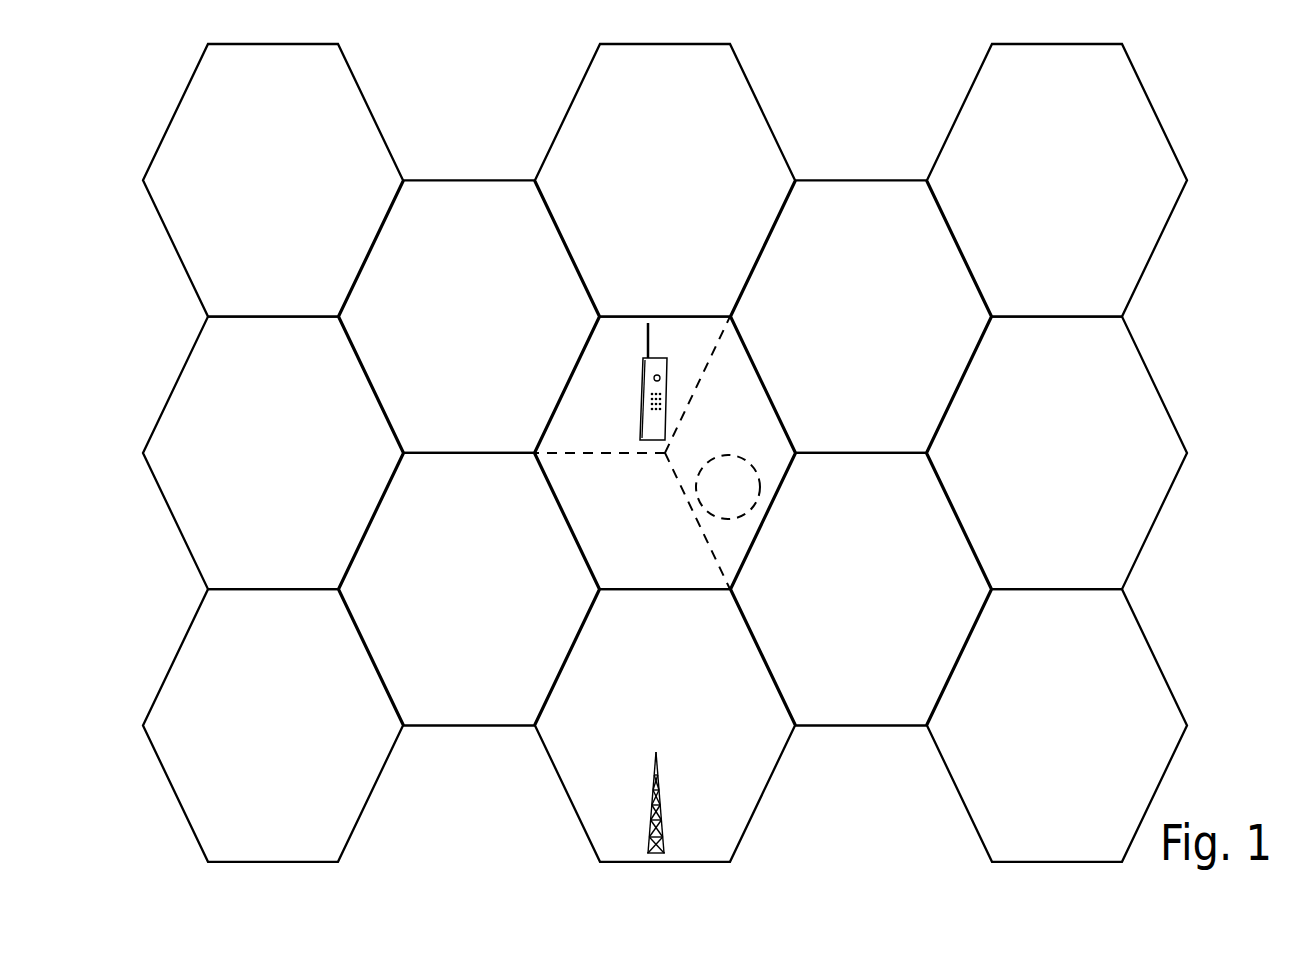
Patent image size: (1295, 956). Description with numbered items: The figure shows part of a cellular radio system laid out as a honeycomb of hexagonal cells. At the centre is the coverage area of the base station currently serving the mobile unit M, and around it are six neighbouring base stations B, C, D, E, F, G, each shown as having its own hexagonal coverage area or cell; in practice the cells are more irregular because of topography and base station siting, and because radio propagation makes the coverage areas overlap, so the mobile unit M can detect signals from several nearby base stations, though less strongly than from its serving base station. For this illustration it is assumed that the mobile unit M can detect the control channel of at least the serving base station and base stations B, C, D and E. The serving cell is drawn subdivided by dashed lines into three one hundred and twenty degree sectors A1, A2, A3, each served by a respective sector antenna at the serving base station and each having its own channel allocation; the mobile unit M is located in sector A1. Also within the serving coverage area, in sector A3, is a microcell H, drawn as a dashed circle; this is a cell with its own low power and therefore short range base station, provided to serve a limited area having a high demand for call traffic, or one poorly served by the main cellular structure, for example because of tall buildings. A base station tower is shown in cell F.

The sector A1 is at (632, 385).
The sector A2 is at (632, 521).
The sector A3 is at (751, 453).
The neighbouring base station B is at (469, 316).
The neighbouring base station C is at (665, 180).
The neighbouring base station D is at (861, 316).
The neighbouring base station E is at (861, 589).
The neighbouring base station F is at (665, 725).
The neighbouring base station G is at (469, 589).
The microcell H is at (728, 487).
The mobile unit M is at (641, 381).